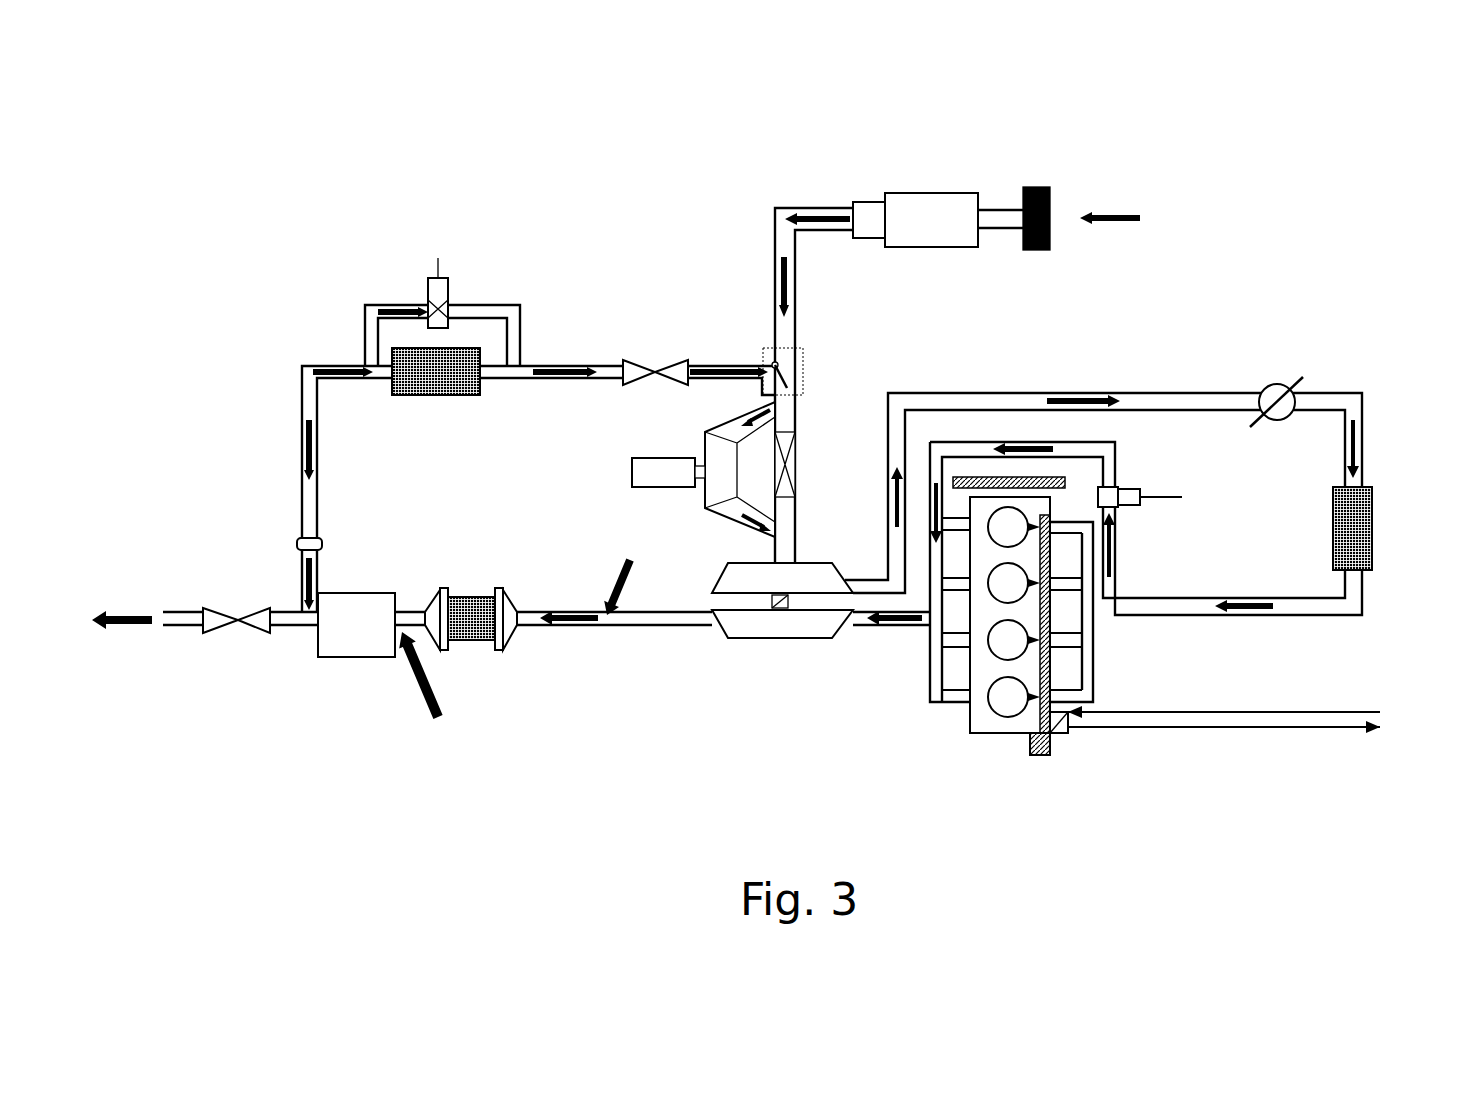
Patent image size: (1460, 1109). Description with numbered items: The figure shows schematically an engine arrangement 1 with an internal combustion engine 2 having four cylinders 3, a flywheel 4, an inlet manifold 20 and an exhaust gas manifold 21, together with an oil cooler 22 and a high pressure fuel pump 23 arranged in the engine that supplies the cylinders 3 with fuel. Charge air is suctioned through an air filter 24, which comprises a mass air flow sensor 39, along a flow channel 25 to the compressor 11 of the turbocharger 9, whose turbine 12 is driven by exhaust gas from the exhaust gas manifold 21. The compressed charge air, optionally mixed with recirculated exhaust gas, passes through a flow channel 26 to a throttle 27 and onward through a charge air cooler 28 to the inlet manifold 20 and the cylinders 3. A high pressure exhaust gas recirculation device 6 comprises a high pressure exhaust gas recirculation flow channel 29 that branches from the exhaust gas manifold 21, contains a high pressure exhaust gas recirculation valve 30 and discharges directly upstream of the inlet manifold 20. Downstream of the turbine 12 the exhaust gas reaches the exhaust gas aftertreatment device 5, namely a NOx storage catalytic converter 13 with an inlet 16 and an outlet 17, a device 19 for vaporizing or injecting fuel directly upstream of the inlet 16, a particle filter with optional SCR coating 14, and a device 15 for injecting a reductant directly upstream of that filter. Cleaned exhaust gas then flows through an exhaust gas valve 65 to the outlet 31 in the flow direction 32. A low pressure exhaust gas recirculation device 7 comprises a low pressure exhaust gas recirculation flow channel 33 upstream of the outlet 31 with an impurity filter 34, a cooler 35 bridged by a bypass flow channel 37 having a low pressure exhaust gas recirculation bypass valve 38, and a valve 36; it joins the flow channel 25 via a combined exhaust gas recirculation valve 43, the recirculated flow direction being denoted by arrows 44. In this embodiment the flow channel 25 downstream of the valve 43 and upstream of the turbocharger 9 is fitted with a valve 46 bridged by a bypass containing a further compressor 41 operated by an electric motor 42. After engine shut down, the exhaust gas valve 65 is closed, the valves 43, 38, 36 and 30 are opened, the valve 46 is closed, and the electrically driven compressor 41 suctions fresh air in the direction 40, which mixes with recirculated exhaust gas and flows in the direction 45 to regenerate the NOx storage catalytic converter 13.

The engine arrangement 1 is at (292, 296).
The internal combustion engine 2 is at (974, 756).
The cylinders 3 is at (1006, 735).
The flywheel 4 is at (1090, 480).
The exhaust gas aftertreatment device 5 is at (470, 706).
The high pressure exhaust gas recirculation device 6 is at (1160, 474).
The low pressure exhaust gas recirculation device 7 is at (557, 296).
The turbocharger 9 is at (684, 584).
The compressor 11 is at (820, 563).
The turbine 12 is at (725, 640).
The NOx storage catalytic converter 13 is at (470, 597).
The particle filter with optional SCR coating 14 is at (345, 660).
The device for injecting a reductant 15 is at (425, 722).
The inlet 16 is at (506, 597).
The outlet 17 is at (430, 605).
The device for vaporizing or injecting fuel 19 is at (618, 578).
The inlet manifold 20 is at (1095, 650).
The exhaust gas manifold 21 is at (928, 690).
The oil cooler 22 is at (1040, 756).
The high pressure fuel pump 23 is at (1064, 734).
The air filter 24 is at (940, 193).
The flow channel 25 is at (799, 316).
The flow channel 26 is at (905, 393).
The throttle 27 is at (1277, 384).
The charge air cooler 28 is at (1373, 528).
The high pressure exhaust gas recirculation flow channel 29 is at (1070, 395).
The high pressure exhaust gas recirculation valve 30 is at (1125, 515).
The outlet 31 is at (190, 630).
The flow direction of the exhaust gas 32 is at (130, 636).
The low pressure exhaust gas recirculation flow channel 33 is at (300, 381).
The impurity filter 34 is at (325, 538).
The cooler 35 is at (435, 396).
The valve 36 is at (650, 358).
The bypass flow channel 37 is at (385, 303).
The low pressure exhaust gas recirculation bypass valve 38 is at (450, 283).
The mass air flow sensor 39 is at (862, 200).
The flow direction of the suctioned fresh air 40 is at (1123, 205).
The further compressor 41 is at (703, 440).
The electric motor 42 is at (630, 468).
The combined exhaust gas recirculation valve 43 is at (805, 376).
The flow direction of the recirculated exhaust gas 44 is at (720, 362).
The flow direction of the exhaust gas-air mixture 45 is at (575, 628).
The valve 46 is at (800, 470).
The exhaust gas valve 65 is at (238, 610).